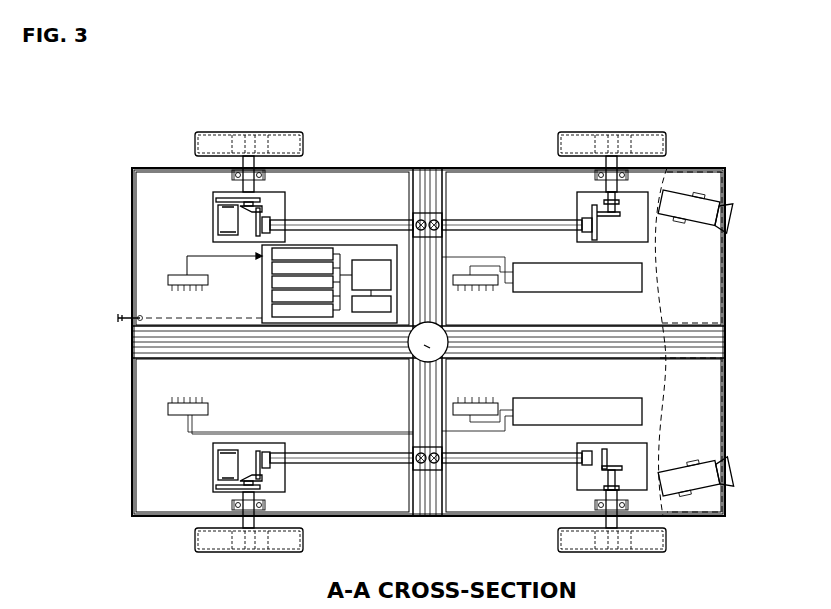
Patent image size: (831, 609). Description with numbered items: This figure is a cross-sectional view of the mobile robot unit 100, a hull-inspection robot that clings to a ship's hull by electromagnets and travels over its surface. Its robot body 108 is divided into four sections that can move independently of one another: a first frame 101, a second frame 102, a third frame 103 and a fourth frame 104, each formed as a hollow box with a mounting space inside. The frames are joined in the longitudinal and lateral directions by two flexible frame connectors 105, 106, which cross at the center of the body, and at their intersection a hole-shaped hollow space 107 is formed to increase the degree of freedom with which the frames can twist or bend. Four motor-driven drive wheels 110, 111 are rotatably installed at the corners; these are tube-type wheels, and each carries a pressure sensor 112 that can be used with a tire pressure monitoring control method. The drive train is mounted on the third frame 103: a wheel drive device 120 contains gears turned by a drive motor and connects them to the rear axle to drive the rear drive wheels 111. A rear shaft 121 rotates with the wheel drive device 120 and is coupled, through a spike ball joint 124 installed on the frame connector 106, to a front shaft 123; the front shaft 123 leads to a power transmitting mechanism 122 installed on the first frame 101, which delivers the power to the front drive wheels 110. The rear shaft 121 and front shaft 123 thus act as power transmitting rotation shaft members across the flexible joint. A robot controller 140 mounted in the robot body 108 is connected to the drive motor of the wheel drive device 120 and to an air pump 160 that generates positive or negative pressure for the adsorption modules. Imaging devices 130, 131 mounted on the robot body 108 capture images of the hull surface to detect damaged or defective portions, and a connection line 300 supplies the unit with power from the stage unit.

The mobile robot unit 100 is at (450, 76).
The first frame 101 is at (725, 260).
The second frame 102 is at (725, 418).
The third frame 103 is at (130, 260).
The fourth frame 104 is at (130, 416).
The frame connector 105 is at (725, 345).
The frame connector 106 is at (428, 168).
The hollow space 107 is at (420, 352).
The robot body 108 is at (128, 165).
The drive wheel 110 is at (574, 131).
The drive wheel 111 is at (218, 131).
The pressure sensor 112 is at (286, 150).
The wheel drive device 120 is at (213, 220).
The rear shaft 121 is at (308, 219).
The power transmitting mechanism 122 is at (577, 240).
The front shaft 123 is at (520, 219).
The spike ball joint 124 is at (472, 198).
The imaging device 130 is at (735, 207).
The imaging device 131 is at (735, 478).
The robot controller 140 is at (262, 288).
The air pump 160 is at (642, 282).
The connection line 300 is at (116, 321).